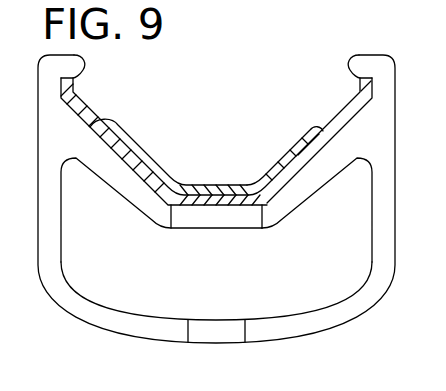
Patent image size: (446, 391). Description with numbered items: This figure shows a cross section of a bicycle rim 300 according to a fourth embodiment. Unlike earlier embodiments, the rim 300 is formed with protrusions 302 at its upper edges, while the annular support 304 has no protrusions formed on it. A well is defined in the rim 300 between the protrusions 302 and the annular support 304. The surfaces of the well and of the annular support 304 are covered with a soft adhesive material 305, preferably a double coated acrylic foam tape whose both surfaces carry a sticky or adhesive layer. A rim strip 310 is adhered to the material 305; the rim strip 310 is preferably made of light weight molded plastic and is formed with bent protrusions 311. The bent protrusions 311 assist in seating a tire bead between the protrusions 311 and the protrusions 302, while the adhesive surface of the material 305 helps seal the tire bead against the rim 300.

The rim 300 is at (216, 211).
The protrusions 302 is at (78, 70).
The annular support 304 is at (306, 187).
The soft adhesive material 305 is at (90, 126).
The rim strip 310 is at (266, 183).
The bent protrusions 311 is at (133, 136).